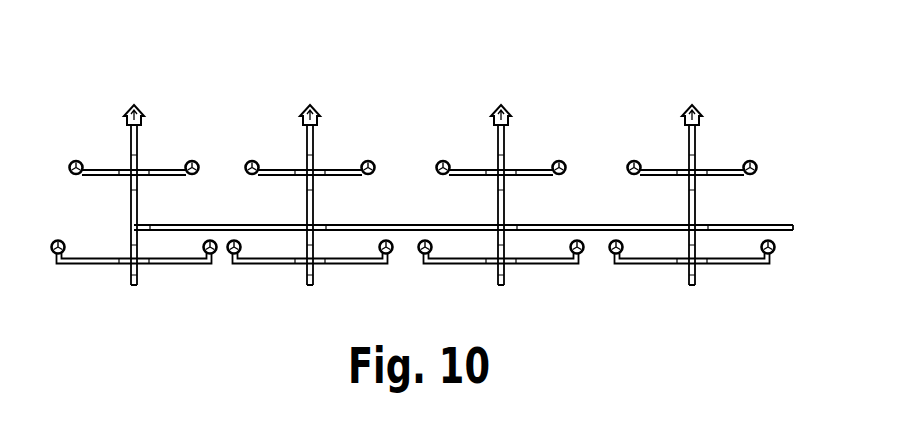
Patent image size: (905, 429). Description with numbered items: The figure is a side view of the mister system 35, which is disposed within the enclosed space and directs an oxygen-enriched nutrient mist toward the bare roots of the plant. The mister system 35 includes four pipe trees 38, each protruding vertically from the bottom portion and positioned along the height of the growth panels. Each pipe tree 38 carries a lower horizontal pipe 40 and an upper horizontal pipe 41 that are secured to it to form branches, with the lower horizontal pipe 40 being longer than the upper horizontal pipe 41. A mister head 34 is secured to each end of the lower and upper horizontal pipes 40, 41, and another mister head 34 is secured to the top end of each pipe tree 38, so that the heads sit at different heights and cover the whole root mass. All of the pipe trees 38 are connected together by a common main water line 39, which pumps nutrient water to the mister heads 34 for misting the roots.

The mister system 35 is at (101, 110).
The mister head 34 is at (499, 104).
The pipe tree 38 is at (315, 155).
The common main water line 39 is at (763, 226).
The upper horizontal pipe 41 is at (716, 169).
The lower horizontal pipe 40 is at (718, 266).